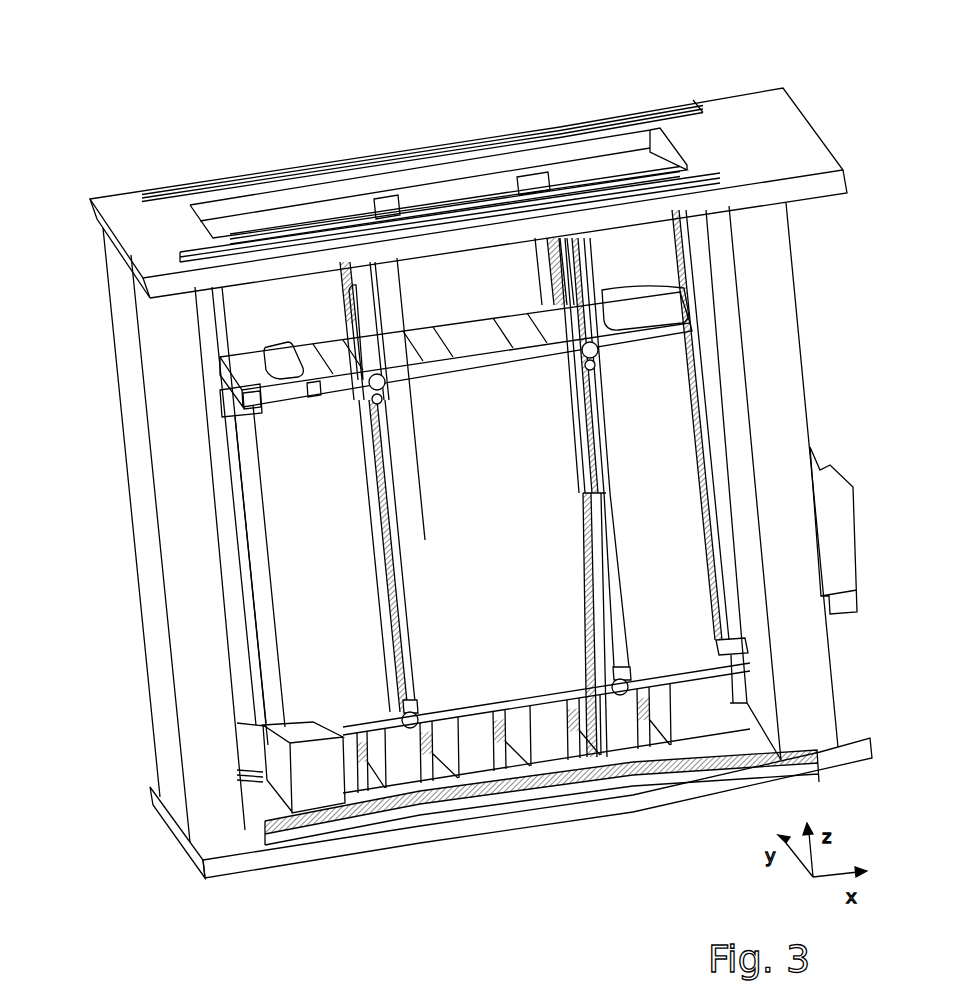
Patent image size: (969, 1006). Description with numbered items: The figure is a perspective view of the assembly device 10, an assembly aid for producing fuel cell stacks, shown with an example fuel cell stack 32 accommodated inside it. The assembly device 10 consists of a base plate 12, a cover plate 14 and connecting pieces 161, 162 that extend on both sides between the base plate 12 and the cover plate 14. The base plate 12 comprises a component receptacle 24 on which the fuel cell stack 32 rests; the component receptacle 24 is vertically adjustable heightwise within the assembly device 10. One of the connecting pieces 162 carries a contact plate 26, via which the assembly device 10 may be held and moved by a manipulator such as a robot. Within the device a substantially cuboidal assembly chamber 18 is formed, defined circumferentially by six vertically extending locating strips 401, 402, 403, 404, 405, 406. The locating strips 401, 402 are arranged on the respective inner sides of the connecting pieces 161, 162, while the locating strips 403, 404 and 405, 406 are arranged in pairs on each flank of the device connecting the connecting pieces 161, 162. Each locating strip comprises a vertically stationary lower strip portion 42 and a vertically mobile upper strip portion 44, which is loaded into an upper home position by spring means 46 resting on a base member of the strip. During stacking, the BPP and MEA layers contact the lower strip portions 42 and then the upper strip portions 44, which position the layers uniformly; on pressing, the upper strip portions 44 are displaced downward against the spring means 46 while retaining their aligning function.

The assembly device 10 is at (451, 98).
The base plate 12 is at (217, 847).
The cover plate 14 is at (787, 127).
The connecting piece 161 is at (148, 491).
The connecting piece 162 is at (783, 313).
The assembly chamber 18 is at (273, 307).
The component receptacle 24 is at (330, 782).
The contact plate 26 is at (830, 543).
The fuel cell stack 32 is at (537, 430).
The locating strip 401 is at (227, 528).
The locating strip 402 is at (713, 367).
The locating strip 403 is at (412, 745).
The locating strip 404 is at (620, 700).
The locating strip 405 is at (401, 200).
The locating strip 406 is at (543, 183).
The lower strip portion 42 is at (592, 607).
The upper strip portion 44 is at (560, 233).
The spring means 46 is at (617, 622).